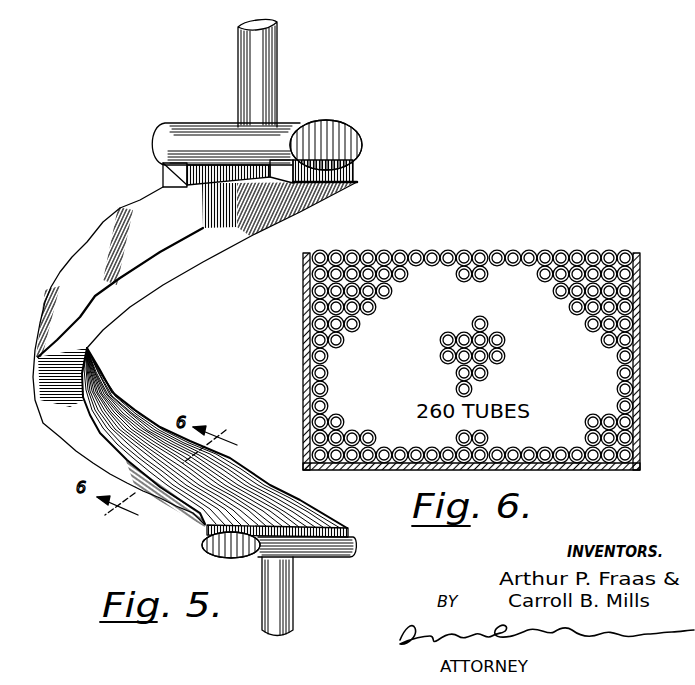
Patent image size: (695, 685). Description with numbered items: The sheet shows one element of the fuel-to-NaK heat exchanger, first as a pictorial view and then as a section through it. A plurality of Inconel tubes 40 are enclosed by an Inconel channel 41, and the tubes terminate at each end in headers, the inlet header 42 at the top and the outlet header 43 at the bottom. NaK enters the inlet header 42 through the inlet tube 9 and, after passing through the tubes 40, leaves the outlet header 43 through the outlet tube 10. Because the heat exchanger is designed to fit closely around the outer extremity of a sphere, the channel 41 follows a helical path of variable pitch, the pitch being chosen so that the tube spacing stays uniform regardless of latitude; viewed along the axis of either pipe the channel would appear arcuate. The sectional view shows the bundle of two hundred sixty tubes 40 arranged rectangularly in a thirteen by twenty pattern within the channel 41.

In FIG. 5, the inlet tube 9 is at (273, 47).
In FIG. 5, the inlet header 42 is at (347, 132).
In FIG. 5, the Inconel channel 41 is at (117, 315).
In FIG. 6, the Inconel channel 41 is at (302, 323).
In FIG. 5, the Inconel tubes 40 is at (228, 477).
In FIG. 6, the Inconel tubes 40 is at (512, 253).
In FIG. 5, the outlet header 43 is at (330, 557).
In FIG. 5, the outlet tube 10 is at (293, 617).